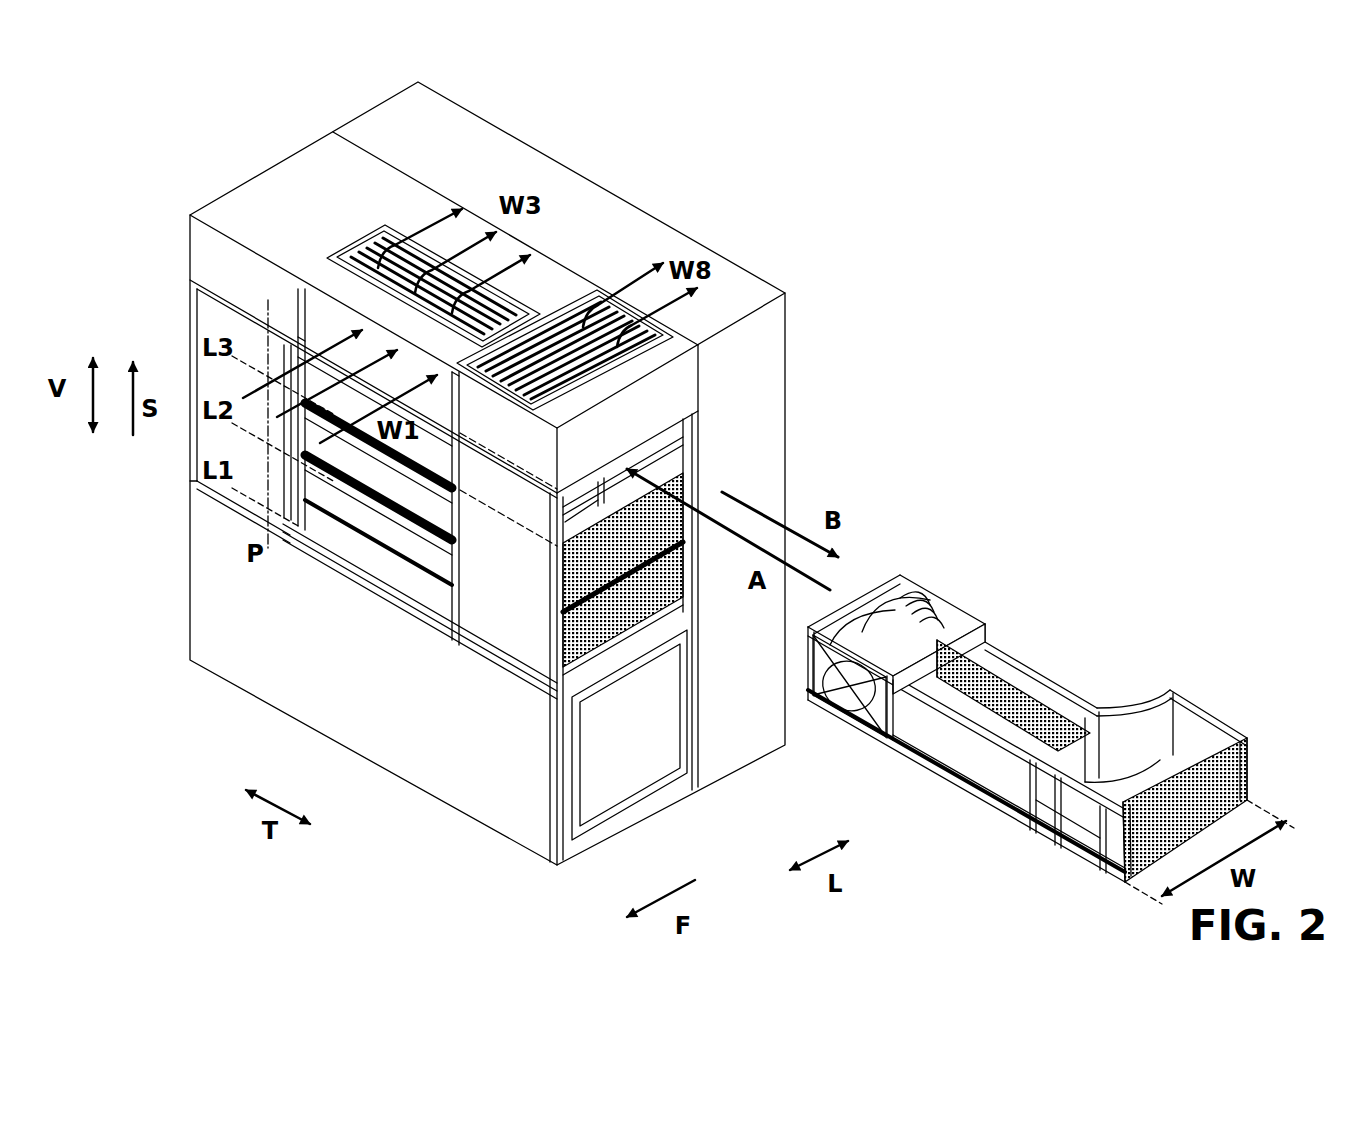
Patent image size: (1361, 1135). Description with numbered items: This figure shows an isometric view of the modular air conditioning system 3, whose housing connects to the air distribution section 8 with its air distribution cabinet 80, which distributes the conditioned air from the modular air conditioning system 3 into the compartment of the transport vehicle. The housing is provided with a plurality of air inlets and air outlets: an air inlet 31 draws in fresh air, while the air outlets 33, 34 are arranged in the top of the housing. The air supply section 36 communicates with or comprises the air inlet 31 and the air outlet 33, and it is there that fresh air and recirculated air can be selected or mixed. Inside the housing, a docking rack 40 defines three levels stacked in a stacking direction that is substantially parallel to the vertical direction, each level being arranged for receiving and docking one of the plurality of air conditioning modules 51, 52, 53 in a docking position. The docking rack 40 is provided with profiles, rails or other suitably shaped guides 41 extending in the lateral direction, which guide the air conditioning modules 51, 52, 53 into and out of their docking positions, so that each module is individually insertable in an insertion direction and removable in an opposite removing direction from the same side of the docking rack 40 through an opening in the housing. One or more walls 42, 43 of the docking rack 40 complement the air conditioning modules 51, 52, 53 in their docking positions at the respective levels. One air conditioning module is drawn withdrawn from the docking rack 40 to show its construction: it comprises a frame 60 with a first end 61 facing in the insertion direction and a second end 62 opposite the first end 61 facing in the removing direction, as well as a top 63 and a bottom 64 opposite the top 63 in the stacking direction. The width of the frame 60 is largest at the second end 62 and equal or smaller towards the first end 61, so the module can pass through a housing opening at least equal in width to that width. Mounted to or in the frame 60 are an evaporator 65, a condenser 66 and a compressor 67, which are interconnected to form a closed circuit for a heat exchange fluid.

The modular air conditioning system 3 is at (266, 134).
The air distribution section 8 is at (528, 124).
The air inlet 31 is at (298, 309).
The air outlet 33 is at (362, 250).
The air outlet 34 is at (668, 323).
The air supply section 36 is at (224, 205).
The docking rack 40 is at (190, 488).
The guides 41 is at (432, 492).
The wall 42 is at (480, 626).
The wall 43 is at (252, 483).
The air conditioning module 51 is at (343, 523).
The air conditioning module 52 is at (400, 492).
The air conditioning module 53 is at (972, 782).
The frame 60 is at (922, 748).
The first end 61 is at (892, 582).
The second end 62 is at (1248, 785).
The top 63 is at (1080, 780).
The bottom 64 is at (1035, 820).
The evaporator 65 is at (1017, 690).
The condenser 66 is at (1243, 753).
The compressor 67 is at (900, 595).
The air distribution cabinet 80 is at (635, 222).